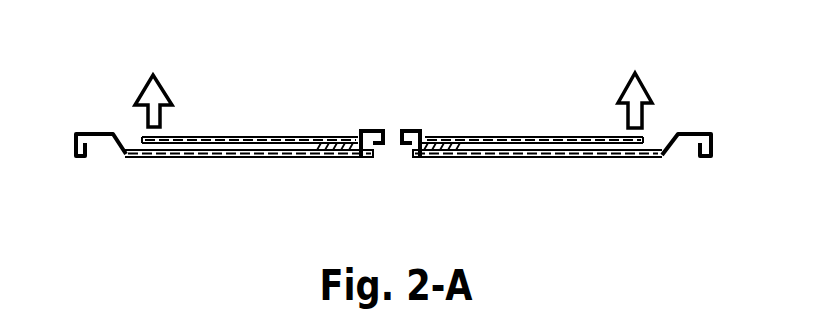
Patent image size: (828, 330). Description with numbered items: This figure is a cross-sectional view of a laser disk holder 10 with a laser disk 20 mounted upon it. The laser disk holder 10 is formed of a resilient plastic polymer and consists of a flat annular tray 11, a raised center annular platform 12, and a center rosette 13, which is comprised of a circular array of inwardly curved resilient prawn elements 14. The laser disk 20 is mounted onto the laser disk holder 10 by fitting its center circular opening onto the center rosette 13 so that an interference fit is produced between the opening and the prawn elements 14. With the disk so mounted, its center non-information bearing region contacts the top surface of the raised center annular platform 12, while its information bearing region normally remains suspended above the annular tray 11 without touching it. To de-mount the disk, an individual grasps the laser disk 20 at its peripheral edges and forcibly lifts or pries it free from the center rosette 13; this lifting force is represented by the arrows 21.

The laser disk holder 10 is at (96, 128).
The flat annular tray 11 is at (243, 166).
The raised center annular platform 12 is at (447, 162).
The center rosette 13 is at (413, 122).
The prawn elements 14 is at (410, 145).
The laser disk 20 is at (277, 128).
The arrows 21 is at (171, 92).